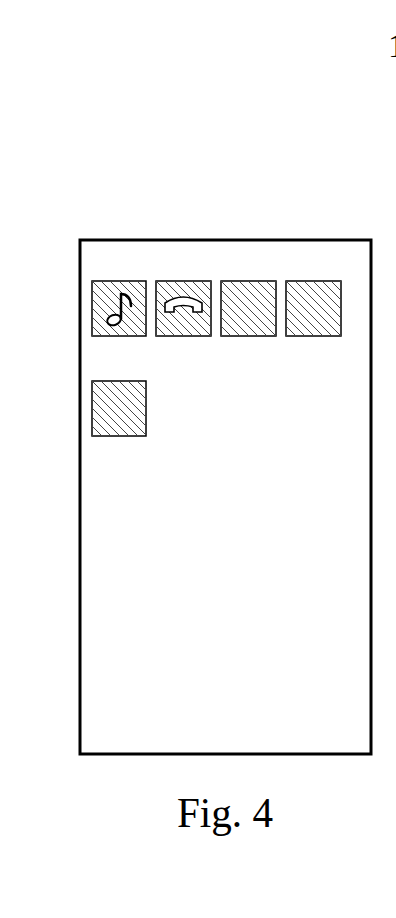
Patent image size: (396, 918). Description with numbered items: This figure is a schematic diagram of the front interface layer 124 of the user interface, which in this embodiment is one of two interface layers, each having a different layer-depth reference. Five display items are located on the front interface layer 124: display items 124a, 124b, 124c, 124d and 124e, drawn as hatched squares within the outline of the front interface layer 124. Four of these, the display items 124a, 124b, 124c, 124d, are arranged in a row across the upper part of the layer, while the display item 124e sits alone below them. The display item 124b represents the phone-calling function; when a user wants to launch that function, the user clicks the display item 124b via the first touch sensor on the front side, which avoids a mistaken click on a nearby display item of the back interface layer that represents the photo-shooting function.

The front interface layer 124 is at (111, 117).
The display item 124a is at (125, 281).
The display item 124b is at (188, 281).
The display item 124c is at (260, 281).
The display item 124d is at (315, 281).
The display item 124e is at (133, 436).